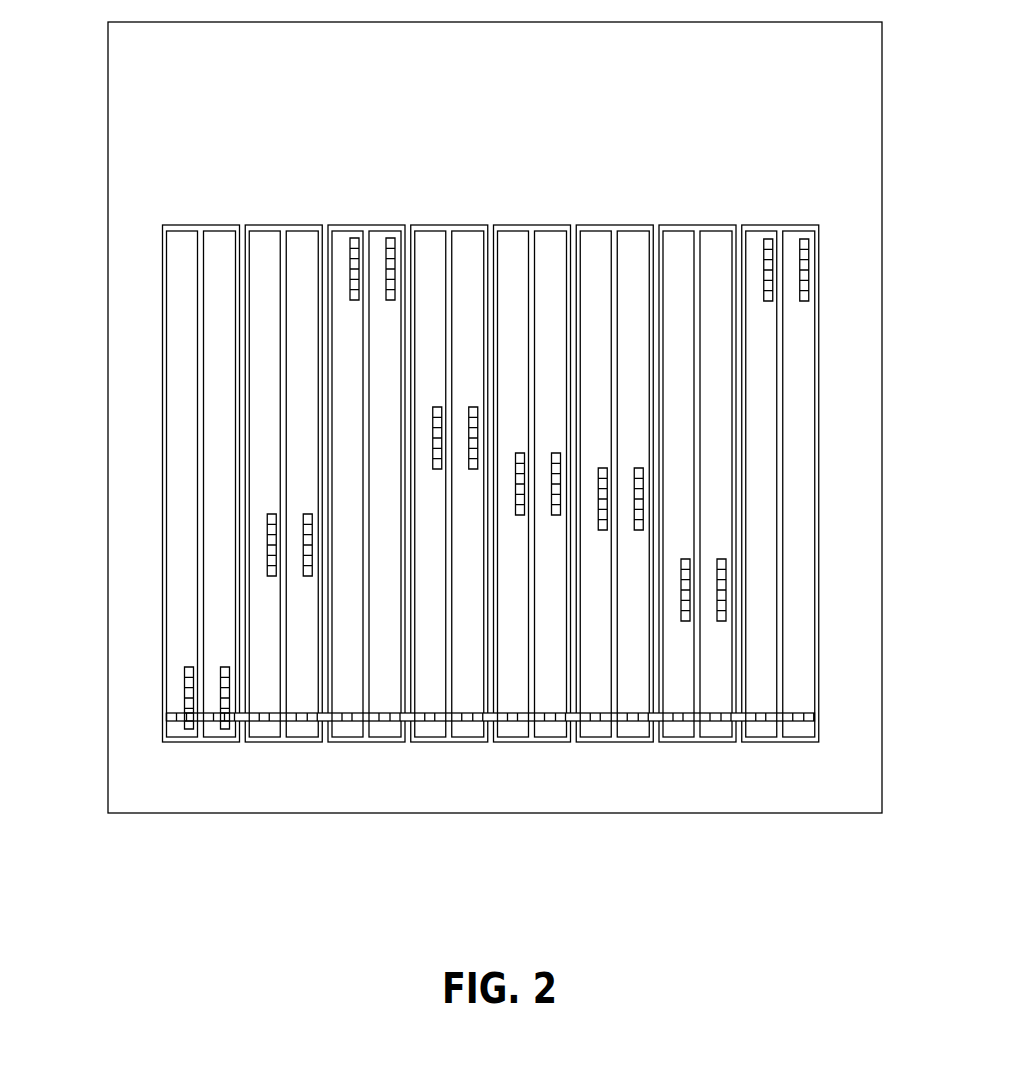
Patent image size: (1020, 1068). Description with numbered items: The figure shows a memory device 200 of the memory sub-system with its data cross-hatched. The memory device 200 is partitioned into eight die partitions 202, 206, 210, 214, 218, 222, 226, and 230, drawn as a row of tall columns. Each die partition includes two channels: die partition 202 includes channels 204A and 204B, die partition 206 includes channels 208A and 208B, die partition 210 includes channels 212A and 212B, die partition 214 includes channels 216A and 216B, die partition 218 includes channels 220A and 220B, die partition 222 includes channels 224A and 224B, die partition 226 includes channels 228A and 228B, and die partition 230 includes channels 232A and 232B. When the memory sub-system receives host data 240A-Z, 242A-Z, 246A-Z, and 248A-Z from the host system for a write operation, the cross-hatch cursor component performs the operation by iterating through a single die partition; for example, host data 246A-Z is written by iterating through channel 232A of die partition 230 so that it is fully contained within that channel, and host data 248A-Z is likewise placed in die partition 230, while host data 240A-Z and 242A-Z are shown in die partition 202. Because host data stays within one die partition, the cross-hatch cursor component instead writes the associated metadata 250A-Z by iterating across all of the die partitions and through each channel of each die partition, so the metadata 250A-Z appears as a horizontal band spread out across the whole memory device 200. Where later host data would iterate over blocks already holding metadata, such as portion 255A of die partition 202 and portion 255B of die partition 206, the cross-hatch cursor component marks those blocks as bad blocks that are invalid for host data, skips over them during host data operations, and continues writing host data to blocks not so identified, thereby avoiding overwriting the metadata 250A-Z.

The memory device 200 is at (530, 94).
The die partition 202 is at (205, 202).
The die partition 206 is at (288, 202).
The die partition 210 is at (370, 202).
The die partition 214 is at (453, 202).
The die partition 218 is at (536, 202).
The die partition 222 is at (619, 202).
The die partition 226 is at (702, 202).
The die partition 230 is at (784, 202).
The channel 204A is at (176, 736).
The channel 204B is at (225, 736).
The channel 208A is at (267, 737).
The channel 208B is at (309, 737).
The channel 212A is at (350, 737).
The channel 212B is at (392, 737).
The channel 216A is at (433, 737).
The channel 216B is at (475, 737).
The channel 220A is at (516, 737).
The channel 220B is at (558, 737).
The channel 224A is at (598, 737).
The channel 224B is at (640, 737).
The channel 228A is at (681, 737).
The channel 228B is at (723, 737).
The channel 232A is at (764, 737).
The channel 232B is at (806, 737).
The host data 240A-Z is at (178, 658).
The host data 242A-Z is at (216, 659).
The host data 246A-Z is at (778, 230).
The host data 248A-Z is at (815, 231).
The metadata 250A-Z is at (813, 716).
The portion 255A is at (190, 718).
The portion 255B is at (222, 718).